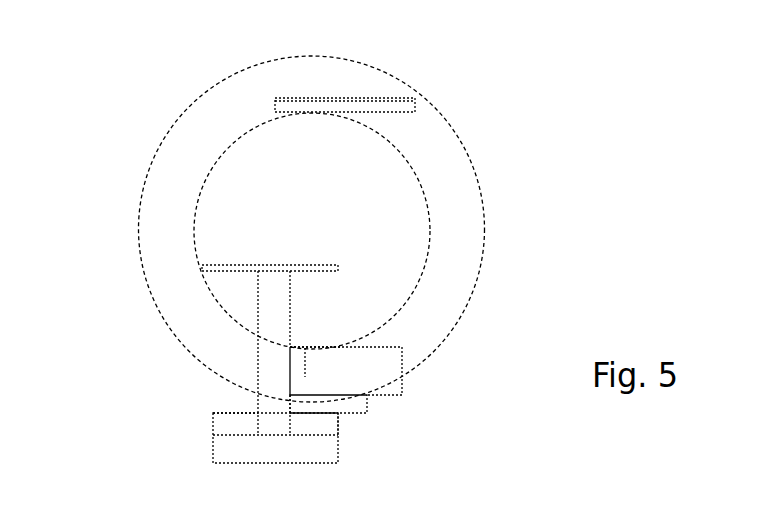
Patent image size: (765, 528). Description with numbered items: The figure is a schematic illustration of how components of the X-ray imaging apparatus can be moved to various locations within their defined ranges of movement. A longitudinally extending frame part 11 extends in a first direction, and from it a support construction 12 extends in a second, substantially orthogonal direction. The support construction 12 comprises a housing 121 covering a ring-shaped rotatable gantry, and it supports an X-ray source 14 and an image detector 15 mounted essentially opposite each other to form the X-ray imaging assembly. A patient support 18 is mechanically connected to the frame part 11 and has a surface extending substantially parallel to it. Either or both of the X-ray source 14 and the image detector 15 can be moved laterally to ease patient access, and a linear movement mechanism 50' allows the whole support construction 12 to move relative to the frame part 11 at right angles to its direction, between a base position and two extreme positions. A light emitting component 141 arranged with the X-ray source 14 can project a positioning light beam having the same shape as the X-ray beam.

The support construction 12 is at (147, 125).
The housing 121 is at (433, 130).
The image detector 15 is at (398, 108).
The patient support 18 is at (207, 267).
The X-ray source 14 is at (395, 385).
The light emitting component 141 is at (291, 345).
The linear movement mechanism 50' is at (329, 463).
The longitudinally extending frame part 11 is at (218, 445).